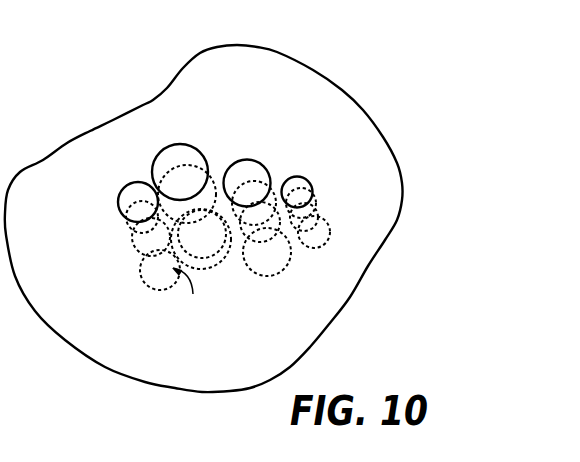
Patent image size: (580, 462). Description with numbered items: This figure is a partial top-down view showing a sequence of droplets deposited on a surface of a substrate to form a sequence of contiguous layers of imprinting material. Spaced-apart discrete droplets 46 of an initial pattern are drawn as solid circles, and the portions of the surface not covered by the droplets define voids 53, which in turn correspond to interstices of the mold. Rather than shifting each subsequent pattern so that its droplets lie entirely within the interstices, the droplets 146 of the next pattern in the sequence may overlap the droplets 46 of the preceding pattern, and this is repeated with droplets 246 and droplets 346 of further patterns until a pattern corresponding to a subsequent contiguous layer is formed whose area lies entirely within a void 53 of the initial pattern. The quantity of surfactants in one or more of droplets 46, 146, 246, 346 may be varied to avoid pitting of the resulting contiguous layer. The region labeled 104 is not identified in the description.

The particle bed region 104 is at (217, 172).
The droplets 46 is at (119, 205).
The droplets of the next pattern 146 is at (132, 229).
The droplets 246 is at (135, 250).
The droplets 346 is at (155, 291).
The voids 53 is at (190, 293).